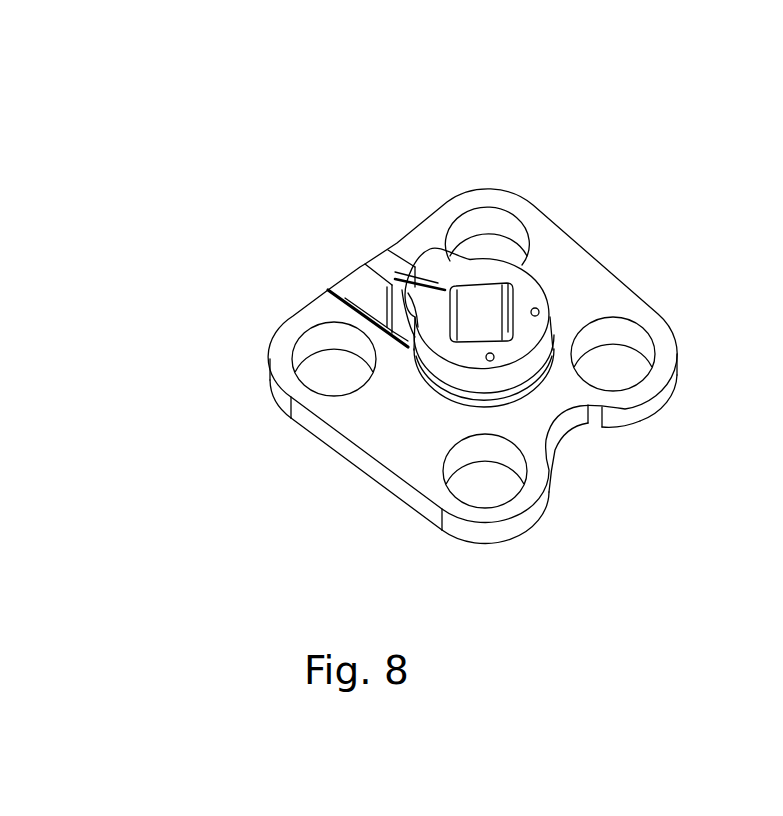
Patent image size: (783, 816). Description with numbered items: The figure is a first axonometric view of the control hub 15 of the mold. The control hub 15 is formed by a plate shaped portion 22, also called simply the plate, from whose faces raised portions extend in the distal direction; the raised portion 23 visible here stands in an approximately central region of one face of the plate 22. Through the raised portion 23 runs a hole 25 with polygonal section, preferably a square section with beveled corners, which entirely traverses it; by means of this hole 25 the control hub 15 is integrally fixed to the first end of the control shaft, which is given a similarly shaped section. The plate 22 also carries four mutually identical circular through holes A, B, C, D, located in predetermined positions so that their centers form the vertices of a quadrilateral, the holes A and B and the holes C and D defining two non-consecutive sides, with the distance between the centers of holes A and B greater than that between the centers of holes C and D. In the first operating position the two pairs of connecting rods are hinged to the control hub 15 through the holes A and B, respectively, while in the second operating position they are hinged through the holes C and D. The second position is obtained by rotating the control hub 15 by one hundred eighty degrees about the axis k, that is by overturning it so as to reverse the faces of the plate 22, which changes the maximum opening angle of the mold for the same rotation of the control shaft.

The control hub 15 is at (350, 495).
The plate shaped portion 22 is at (343, 411).
The raised portion 23 is at (530, 293).
The hole with polygonal section 25 is at (480, 312).
The circular through hole A is at (335, 367).
The circular through hole B is at (482, 490).
The circular through hole C is at (615, 367).
The circular through hole D is at (493, 248).
The axis k- k is at (390, 284).